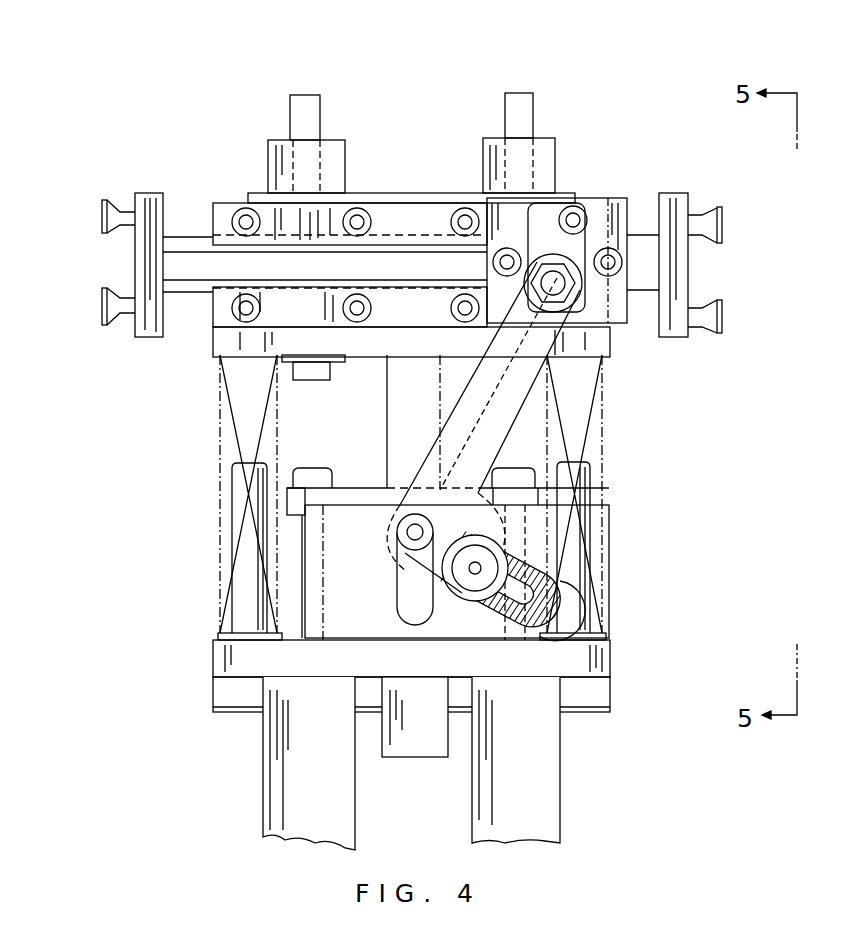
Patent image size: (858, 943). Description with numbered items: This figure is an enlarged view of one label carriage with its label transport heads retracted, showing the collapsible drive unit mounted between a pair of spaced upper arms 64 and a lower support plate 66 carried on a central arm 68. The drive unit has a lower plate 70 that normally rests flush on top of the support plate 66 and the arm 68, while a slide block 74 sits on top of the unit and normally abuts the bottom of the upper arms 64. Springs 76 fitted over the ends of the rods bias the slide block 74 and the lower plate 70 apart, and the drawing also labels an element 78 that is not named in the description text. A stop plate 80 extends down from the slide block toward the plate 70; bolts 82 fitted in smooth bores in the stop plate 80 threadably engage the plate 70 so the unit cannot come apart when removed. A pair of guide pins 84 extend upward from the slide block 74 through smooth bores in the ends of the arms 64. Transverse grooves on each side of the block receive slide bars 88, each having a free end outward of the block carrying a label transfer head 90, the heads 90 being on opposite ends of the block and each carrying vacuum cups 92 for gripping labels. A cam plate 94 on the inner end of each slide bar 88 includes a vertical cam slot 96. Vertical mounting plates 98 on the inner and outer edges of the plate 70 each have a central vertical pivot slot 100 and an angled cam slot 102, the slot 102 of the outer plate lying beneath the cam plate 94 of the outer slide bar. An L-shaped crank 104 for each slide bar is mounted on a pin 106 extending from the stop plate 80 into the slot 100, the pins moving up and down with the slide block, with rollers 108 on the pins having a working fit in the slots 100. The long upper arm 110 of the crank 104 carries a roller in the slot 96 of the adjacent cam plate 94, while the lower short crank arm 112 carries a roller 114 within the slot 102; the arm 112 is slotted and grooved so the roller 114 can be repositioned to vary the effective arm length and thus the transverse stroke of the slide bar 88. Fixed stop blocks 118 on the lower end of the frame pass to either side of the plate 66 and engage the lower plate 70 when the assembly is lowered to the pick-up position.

The upper arms 64 is at (275, 153).
The lower support plate 66 is at (610, 697).
The central arm 68 is at (410, 745).
The lower plate 70 is at (603, 658).
The slide block 74 is at (395, 193).
The springs 76 is at (220, 430).
The guide rod 78 is at (237, 498).
The stop plate 80 is at (362, 488).
The bolts 82 is at (312, 478).
The guide pins 84 is at (315, 110).
The slide bar 88 is at (187, 237).
The label transfer head 90 is at (143, 200).
The vacuum cups 92 is at (102, 300).
The cam plate 94 is at (620, 318).
The vertical cam slot 96 is at (578, 250).
The vertical mounting plates 98 is at (610, 517).
The pivot slot 100 is at (403, 590).
The angled cam slot 102 is at (507, 607).
The L-shaped crank 104 is at (430, 447).
The pins 106 is at (410, 533).
The rollers 108 is at (400, 553).
The long upper arm 110 is at (477, 372).
The lower short crank arm 112 is at (558, 604).
The roller 114 is at (482, 598).
The fixed stop blocks 118 is at (263, 775).